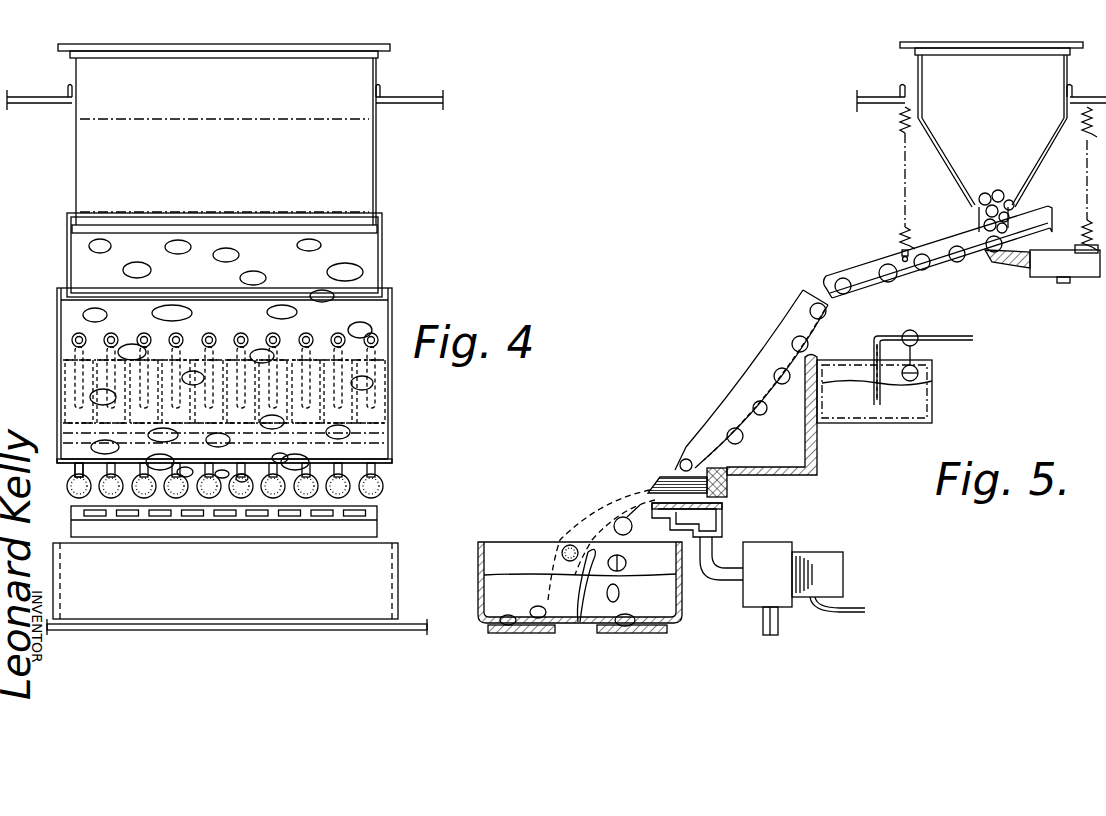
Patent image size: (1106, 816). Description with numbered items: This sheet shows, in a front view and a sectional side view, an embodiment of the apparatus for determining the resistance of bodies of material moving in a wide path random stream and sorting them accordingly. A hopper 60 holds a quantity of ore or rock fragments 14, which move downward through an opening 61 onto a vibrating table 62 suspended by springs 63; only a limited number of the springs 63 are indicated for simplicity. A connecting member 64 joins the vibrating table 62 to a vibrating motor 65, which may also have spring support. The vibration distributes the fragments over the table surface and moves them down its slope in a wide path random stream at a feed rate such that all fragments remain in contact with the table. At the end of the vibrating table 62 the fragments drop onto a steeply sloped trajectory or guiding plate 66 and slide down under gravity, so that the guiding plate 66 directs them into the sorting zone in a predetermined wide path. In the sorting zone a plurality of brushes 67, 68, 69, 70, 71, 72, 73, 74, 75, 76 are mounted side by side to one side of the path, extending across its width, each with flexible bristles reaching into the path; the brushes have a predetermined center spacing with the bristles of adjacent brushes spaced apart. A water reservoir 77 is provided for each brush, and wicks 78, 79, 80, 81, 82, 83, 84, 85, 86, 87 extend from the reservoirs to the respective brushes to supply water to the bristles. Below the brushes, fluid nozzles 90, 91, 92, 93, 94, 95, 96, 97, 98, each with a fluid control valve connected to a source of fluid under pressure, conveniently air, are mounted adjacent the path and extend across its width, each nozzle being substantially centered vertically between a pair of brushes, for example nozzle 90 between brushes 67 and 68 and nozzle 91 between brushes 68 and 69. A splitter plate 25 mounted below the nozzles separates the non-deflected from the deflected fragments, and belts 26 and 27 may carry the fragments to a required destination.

In FIG. 5, the rock fragments 14 is at (681, 458).
In FIG. 4, the splitter plate 25 is at (385, 566).
In FIG. 5, the splitter plate 25 is at (580, 561).
In FIG. 5, the belt 26 is at (647, 620).
In FIG. 4, the belt 27 is at (410, 620).
In FIG. 5, the belt 27 is at (527, 622).
In FIG. 4, the hopper 60 is at (355, 147).
In FIG. 5, the hopper 60 is at (932, 70).
In FIG. 5, the opening 61 is at (982, 221).
In FIG. 4, the vibrating table 62 is at (368, 256).
In FIG. 5, the vibrating table 62 is at (940, 272).
In FIG. 5, the springs 63 is at (909, 192).
In FIG. 5, the connecting member 64 is at (1042, 275).
In FIG. 5, the vibrating motor 65 is at (1078, 268).
In FIG. 4, the guiding plate 66 is at (378, 313).
In FIG. 5, the guiding plate 66 is at (824, 332).
In FIG. 4, the brush 67 is at (68, 490).
In FIG. 4, the brush 68 is at (100, 495).
In FIG. 4, the brush 69 is at (143, 500).
In FIG. 4, the brush 70 is at (175, 500).
In FIG. 4, the brush 71 is at (209, 500).
In FIG. 4, the brush 72 is at (241, 500).
In FIG. 4, the brush 73 is at (273, 500).
In FIG. 4, the brush 74 is at (306, 500).
In FIG. 4, the brush 75 is at (338, 500).
In FIG. 4, the brush 76 is at (383, 491).
In FIG. 5, the brush 76 is at (727, 497).
In FIG. 4, the water reservoir 77 is at (393, 389).
In FIG. 5, the water reservoir 77 is at (915, 402).
In FIG. 4, the wick 78 is at (74, 470).
In FIG. 4, the wick 79 is at (58, 434).
In FIG. 4, the wick 80 is at (58, 444).
In FIG. 4, the wick 81 is at (185, 470).
In FIG. 4, the wick 82 is at (223, 472).
In FIG. 4, the wick 83 is at (244, 476).
In FIG. 4, the wick 84 is at (287, 445).
In FIG. 4, the wick 85 is at (395, 424).
In FIG. 4, the wick 86 is at (393, 447).
In FIG. 4, the wick 87 is at (385, 471).
In FIG. 5, the wick 87 is at (783, 468).
In FIG. 4, the fluid nozzle 90 is at (92, 514).
In FIG. 4, the fluid nozzle 91 is at (126, 518).
In FIG. 4, the fluid nozzle 92 is at (160, 520).
In FIG. 4, the fluid nozzle 93 is at (192, 520).
In FIG. 4, the fluid nozzle 94 is at (225, 520).
In FIG. 4, the fluid nozzle 95 is at (257, 520).
In FIG. 4, the fluid nozzle 96 is at (289, 520).
In FIG. 4, the fluid nozzle 97 is at (322, 520).
In FIG. 4, the fluid nozzle 98 is at (380, 525).
In FIG. 5, the fluid nozzle 98 is at (722, 522).